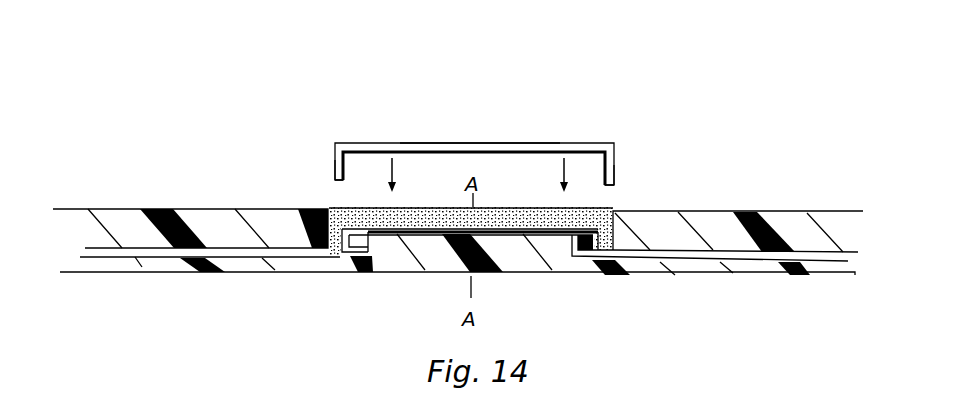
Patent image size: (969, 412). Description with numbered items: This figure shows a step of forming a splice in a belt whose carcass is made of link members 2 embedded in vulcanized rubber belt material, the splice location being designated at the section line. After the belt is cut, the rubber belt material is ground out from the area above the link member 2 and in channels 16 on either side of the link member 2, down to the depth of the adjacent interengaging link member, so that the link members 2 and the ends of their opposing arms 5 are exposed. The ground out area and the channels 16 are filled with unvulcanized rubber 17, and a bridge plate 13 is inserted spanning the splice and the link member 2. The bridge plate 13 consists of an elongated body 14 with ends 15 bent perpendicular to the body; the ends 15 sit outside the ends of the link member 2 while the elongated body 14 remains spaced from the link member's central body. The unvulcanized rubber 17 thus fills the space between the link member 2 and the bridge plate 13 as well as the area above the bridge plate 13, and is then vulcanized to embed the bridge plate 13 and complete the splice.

The link member 2 is at (232, 257).
The arm 5 is at (613, 213).
The bridge plate 13 is at (476, 135).
The elongated body 14 is at (530, 154).
The bent end 15 is at (335, 160).
The channel 16 is at (340, 250).
The unvulcanized rubber 17 is at (509, 208).